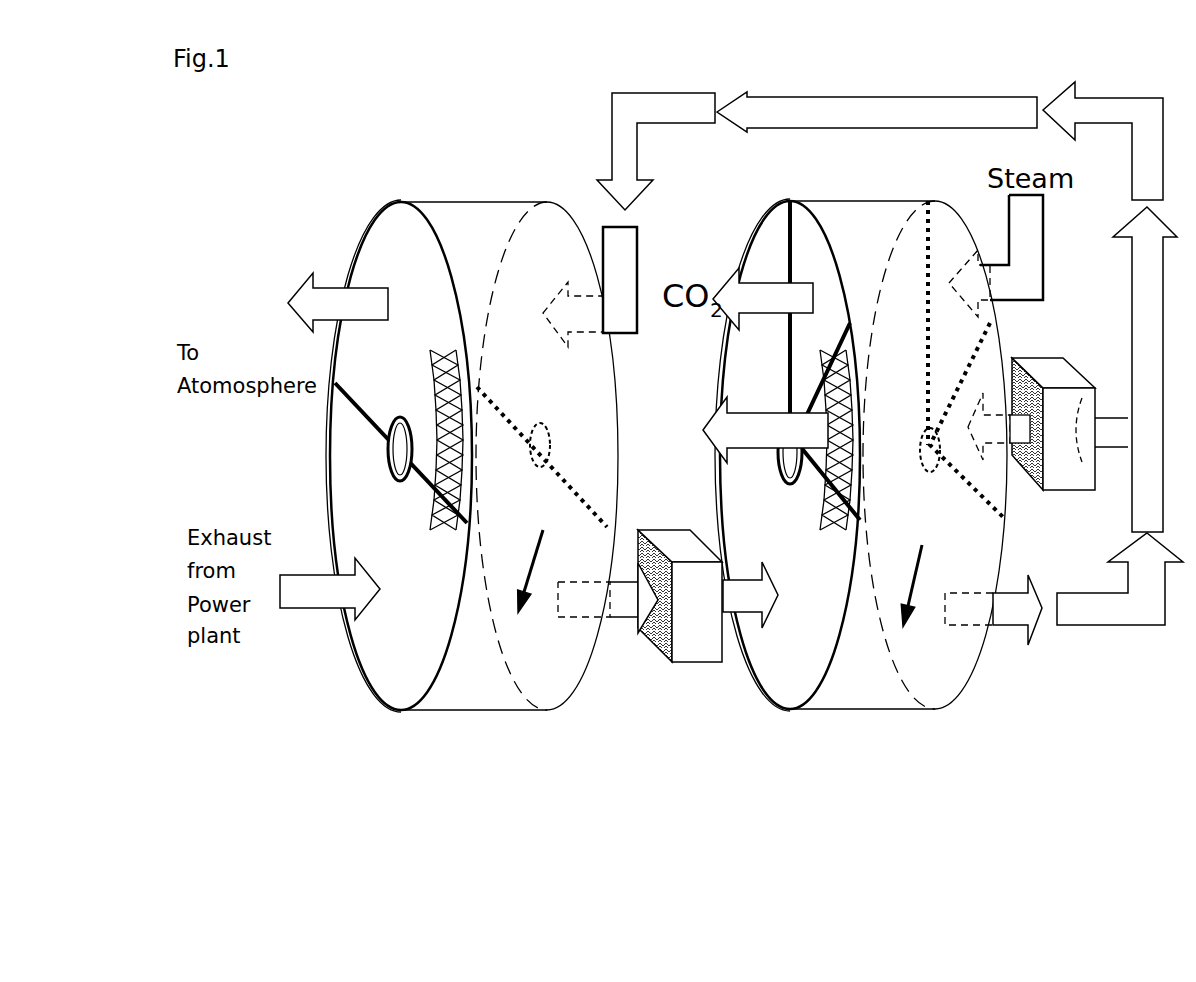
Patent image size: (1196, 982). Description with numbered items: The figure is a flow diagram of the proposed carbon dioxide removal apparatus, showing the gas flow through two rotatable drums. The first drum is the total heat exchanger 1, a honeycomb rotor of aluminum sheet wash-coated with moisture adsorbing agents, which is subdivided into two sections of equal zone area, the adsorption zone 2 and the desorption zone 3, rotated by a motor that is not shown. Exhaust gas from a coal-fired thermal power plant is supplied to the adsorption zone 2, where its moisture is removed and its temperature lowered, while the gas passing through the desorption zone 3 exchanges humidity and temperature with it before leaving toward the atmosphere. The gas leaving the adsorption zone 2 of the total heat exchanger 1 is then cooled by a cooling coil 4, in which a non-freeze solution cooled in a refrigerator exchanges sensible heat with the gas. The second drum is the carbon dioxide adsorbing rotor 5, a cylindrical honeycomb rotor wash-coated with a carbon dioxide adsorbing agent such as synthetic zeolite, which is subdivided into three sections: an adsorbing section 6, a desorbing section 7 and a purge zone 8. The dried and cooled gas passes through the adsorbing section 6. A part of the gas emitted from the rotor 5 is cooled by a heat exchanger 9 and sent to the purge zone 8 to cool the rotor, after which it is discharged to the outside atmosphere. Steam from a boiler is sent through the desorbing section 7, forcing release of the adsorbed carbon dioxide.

The total heat exchanger 1 is at (453, 682).
The adsorption zone 2 is at (380, 640).
The desorption zone 3 is at (378, 262).
The cooling coil 4 is at (682, 635).
The carbon dioxide adsorbing rotor 5 is at (815, 705).
The adsorbing section 6 is at (770, 643).
The desorbing section 7 is at (803, 245).
The purge zone 8 is at (818, 398).
The heat exchanger 9 is at (1062, 367).